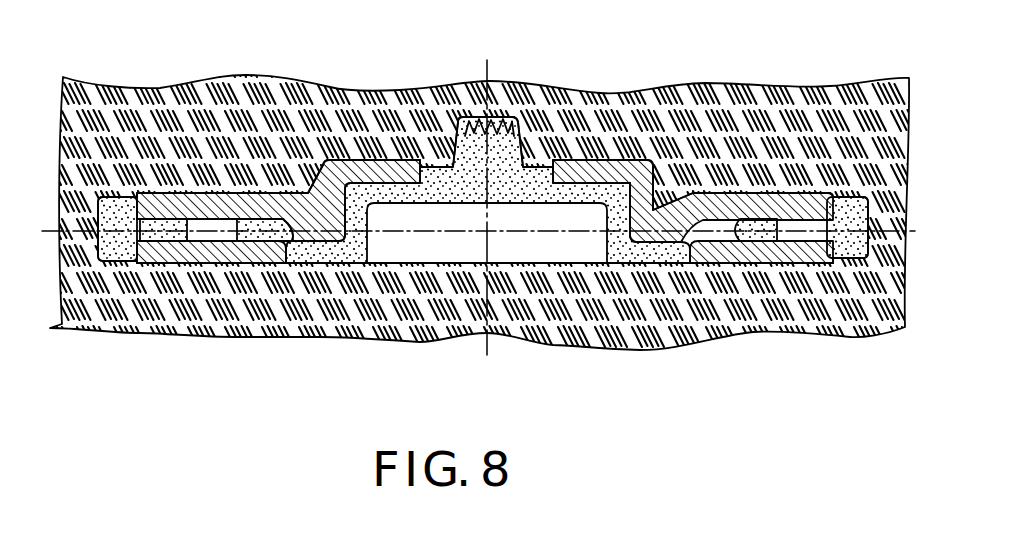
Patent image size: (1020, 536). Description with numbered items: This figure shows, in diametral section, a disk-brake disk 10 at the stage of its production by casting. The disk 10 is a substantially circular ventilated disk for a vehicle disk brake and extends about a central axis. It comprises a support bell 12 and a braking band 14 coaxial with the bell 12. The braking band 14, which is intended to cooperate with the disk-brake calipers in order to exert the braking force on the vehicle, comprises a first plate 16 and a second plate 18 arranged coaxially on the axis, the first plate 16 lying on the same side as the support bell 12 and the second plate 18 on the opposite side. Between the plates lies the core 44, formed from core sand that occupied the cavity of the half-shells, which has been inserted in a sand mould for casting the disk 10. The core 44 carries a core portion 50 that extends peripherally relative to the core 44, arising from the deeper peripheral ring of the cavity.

The disk-brake disk 10 is at (693, 186).
The support bell 12 is at (648, 162).
The braking band 14 is at (767, 205).
The first plate 16 is at (195, 208).
The second plate 18 is at (245, 268).
The core 44 is at (520, 122).
The core portion 50 is at (115, 262).